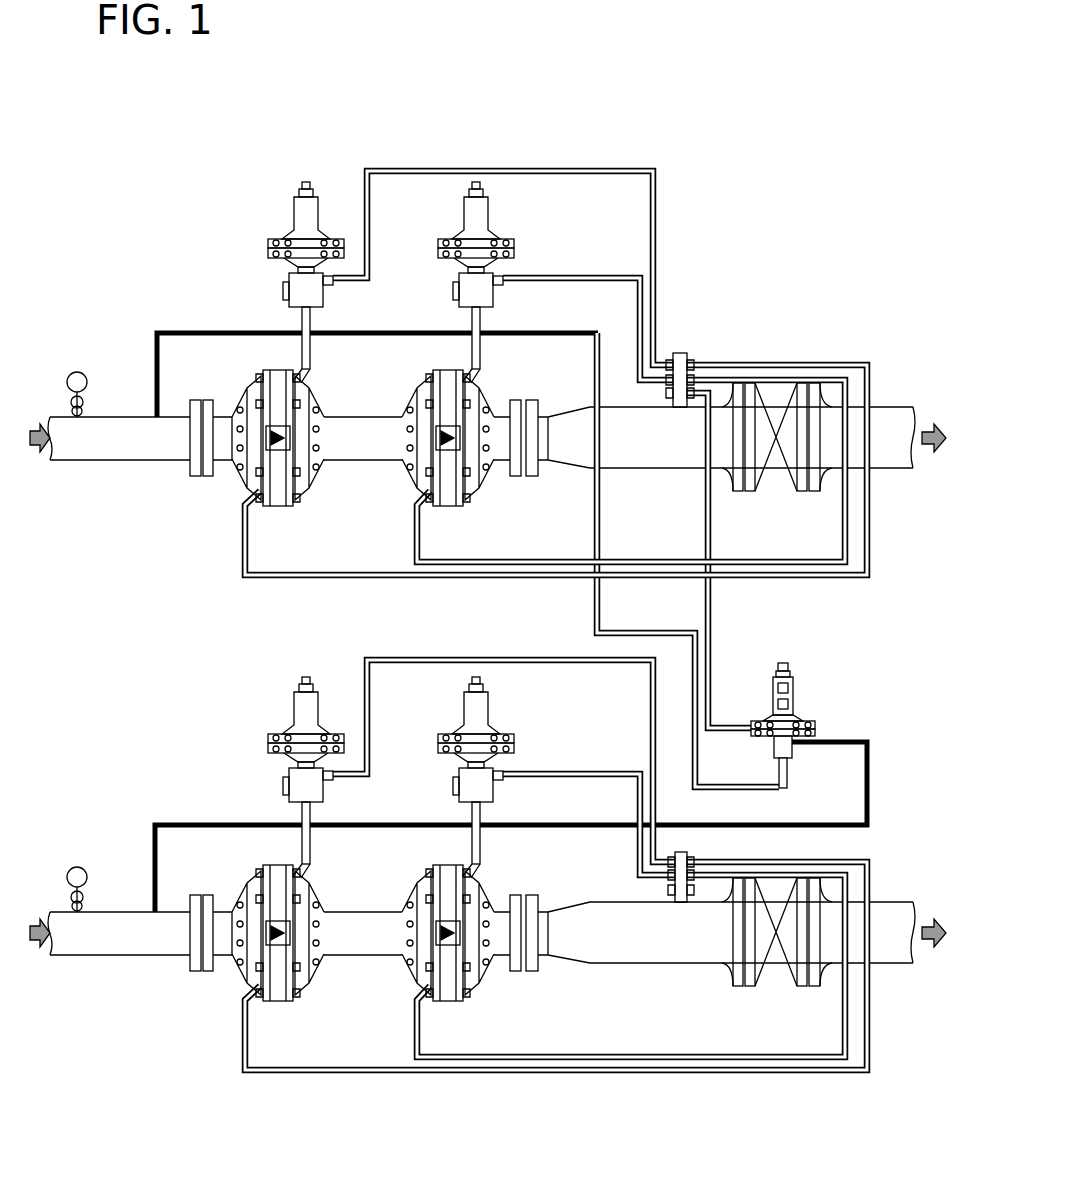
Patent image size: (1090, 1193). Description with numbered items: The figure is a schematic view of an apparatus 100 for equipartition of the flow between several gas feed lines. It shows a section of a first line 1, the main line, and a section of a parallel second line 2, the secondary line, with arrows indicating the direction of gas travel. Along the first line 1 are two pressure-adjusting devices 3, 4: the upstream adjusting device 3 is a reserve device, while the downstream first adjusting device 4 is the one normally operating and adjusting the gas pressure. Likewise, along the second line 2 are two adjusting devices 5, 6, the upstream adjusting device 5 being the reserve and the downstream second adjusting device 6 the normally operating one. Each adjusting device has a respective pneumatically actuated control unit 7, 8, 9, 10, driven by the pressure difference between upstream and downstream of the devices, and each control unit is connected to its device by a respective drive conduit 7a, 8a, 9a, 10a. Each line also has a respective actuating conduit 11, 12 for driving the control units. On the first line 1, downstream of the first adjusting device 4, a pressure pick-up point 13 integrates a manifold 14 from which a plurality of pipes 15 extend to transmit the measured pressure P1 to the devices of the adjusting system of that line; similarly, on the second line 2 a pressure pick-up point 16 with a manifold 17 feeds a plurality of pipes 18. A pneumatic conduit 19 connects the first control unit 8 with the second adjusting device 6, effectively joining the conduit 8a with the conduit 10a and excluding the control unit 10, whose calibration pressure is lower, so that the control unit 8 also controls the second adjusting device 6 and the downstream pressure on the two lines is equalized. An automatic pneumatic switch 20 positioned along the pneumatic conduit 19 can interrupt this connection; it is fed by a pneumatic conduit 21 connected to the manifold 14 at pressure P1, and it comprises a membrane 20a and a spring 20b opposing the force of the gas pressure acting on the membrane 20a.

The first line 1 is at (120, 413).
The second line 2 is at (108, 908).
The adjusting device 3 is at (243, 383).
The first adjusting device 4 is at (413, 383).
The adjusting device 5 is at (245, 878).
The second adjusting device 6 is at (413, 878).
The control unit 7 is at (283, 217).
The first control unit 8 is at (453, 217).
The control unit 9 is at (282, 714).
The control unit 10 is at (453, 714).
The drive conduit 7a is at (313, 360).
The drive conduit 8a is at (483, 358).
The drive conduit 9a is at (313, 855).
The drive conduit 10a is at (483, 854).
The actuating conduit 11 is at (175, 330).
The actuating conduit 12 is at (178, 822).
The pressure pick-up point 13 is at (678, 415).
The manifold 14 is at (681, 348).
The pipes 15 is at (541, 166).
The pressure pick-up point 16 is at (677, 912).
The manifold 17 is at (690, 852).
The pipes 18 is at (332, 660).
The pneumatic conduit 19 is at (593, 617).
The pneumatic switch 20 is at (835, 704).
The membrane 20a is at (822, 649).
The spring 20b is at (848, 694).
The pneumatic conduit 21 is at (712, 612).
The apparatus 100 is at (488, 591).